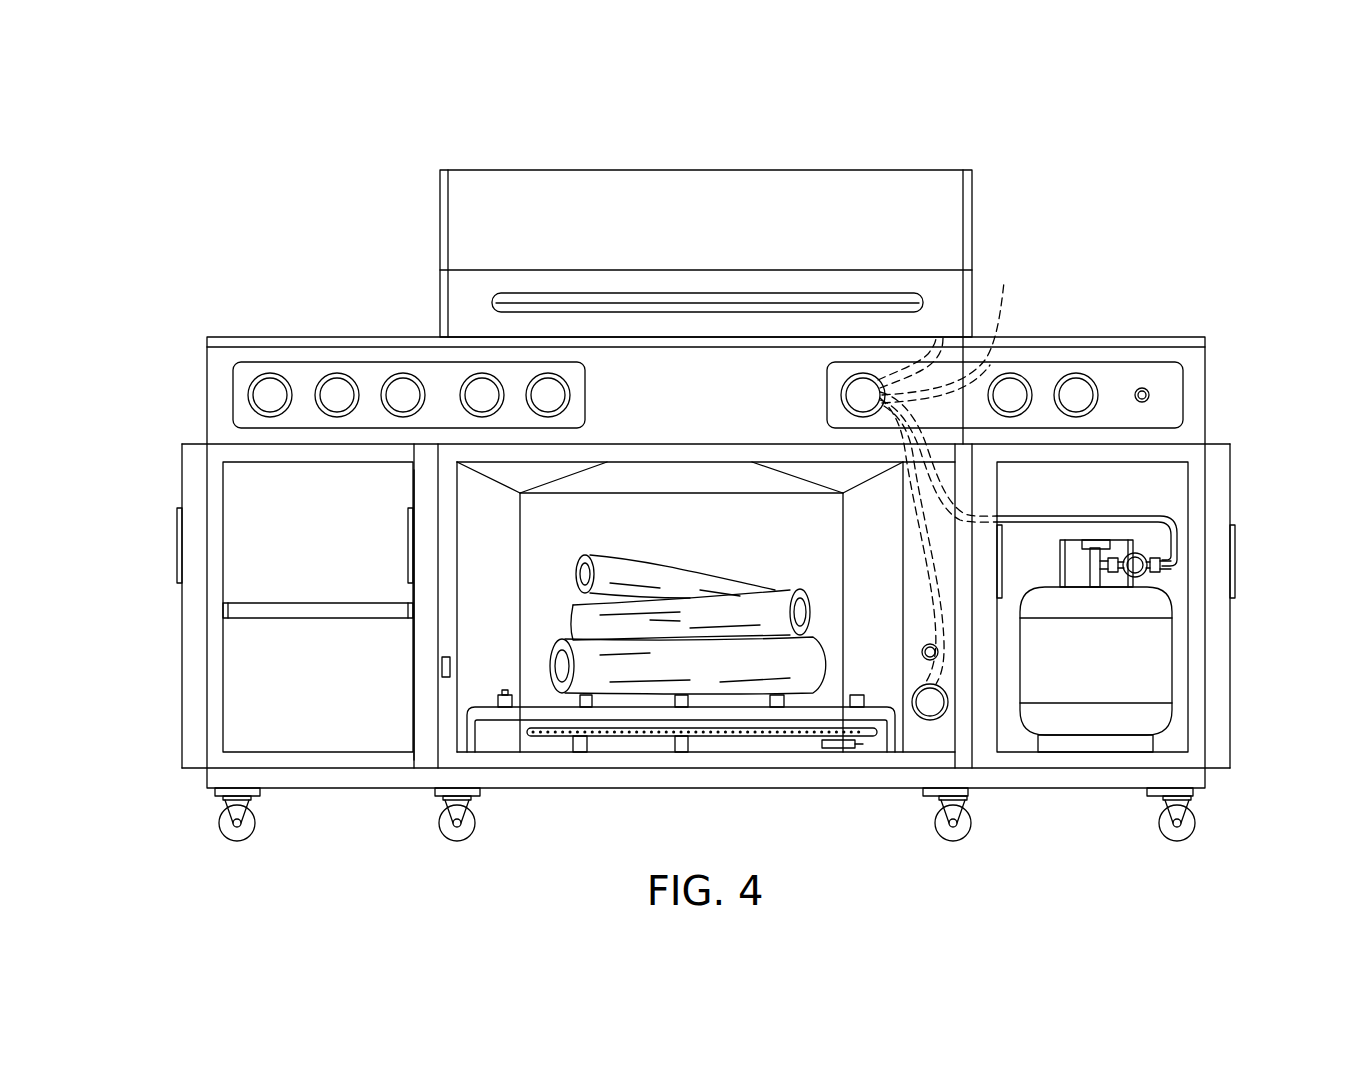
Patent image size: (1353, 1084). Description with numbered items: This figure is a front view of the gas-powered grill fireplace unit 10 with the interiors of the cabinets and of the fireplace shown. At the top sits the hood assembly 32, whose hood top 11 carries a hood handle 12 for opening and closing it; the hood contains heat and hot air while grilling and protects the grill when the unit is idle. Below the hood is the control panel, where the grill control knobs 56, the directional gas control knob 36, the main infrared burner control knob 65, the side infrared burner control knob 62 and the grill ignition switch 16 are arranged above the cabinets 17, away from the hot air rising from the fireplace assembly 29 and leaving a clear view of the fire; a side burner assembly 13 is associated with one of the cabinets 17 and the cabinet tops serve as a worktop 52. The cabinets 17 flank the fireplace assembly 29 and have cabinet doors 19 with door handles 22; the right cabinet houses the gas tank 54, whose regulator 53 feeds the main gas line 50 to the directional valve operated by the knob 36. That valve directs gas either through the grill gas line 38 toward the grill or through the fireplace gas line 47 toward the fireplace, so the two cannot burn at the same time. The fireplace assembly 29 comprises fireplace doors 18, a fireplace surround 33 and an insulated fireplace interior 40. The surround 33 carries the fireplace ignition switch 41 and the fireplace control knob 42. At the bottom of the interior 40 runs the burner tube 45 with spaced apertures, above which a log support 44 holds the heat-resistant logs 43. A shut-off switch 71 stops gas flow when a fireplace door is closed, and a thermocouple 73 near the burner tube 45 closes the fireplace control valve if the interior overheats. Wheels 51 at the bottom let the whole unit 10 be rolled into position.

The grill fireplace unit 10 is at (299, 148).
The hood top 11 is at (945, 168).
The hood handle 12 is at (812, 296).
The side burner assembly 13 is at (1182, 333).
The grill ignition switch 16 is at (1149, 395).
The cabinets 17 is at (245, 497).
The fireplace doors 18 is at (413, 665).
The cabinet doors 19 is at (187, 690).
The door handles 22 is at (177, 541).
The fireplace assembly 29 is at (712, 480).
The hood assembly 32 is at (436, 236).
The fireplace surround 33 is at (918, 736).
The directional gas control knob 36 is at (858, 393).
The grill gas line 38 is at (951, 327).
The fireplace interior 40 is at (666, 528).
The fireplace ignition switch 41 is at (924, 650).
The fireplace control knob 42 is at (924, 697).
The logs 43 is at (745, 612).
The log support 44 is at (503, 693).
The burner tube 45 is at (611, 737).
The fireplace gas line 47 is at (920, 532).
The main gas line 50 is at (1045, 516).
The wheels 51 is at (452, 822).
The worktop 52 is at (253, 332).
The regulator 53 is at (1143, 554).
The gas tank 54 is at (1083, 673).
The grill control knob 56 is at (547, 385).
The side infrared burner control knob 62 is at (1076, 387).
The main infrared burner control knob 65 is at (1010, 387).
The shut-off switch 71 is at (446, 680).
The thermocouple 73 is at (838, 750).